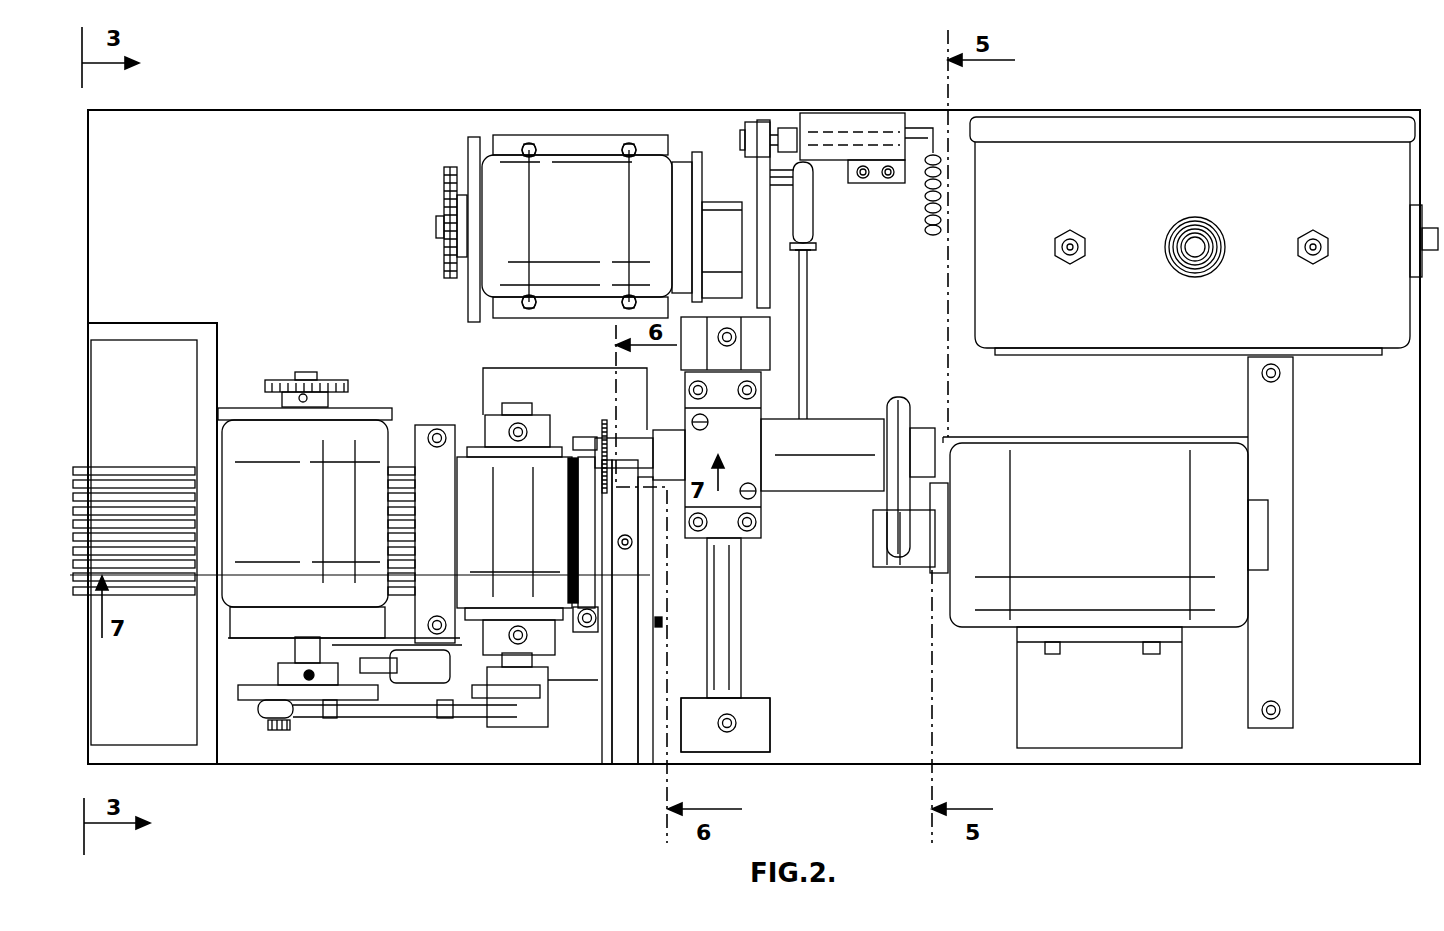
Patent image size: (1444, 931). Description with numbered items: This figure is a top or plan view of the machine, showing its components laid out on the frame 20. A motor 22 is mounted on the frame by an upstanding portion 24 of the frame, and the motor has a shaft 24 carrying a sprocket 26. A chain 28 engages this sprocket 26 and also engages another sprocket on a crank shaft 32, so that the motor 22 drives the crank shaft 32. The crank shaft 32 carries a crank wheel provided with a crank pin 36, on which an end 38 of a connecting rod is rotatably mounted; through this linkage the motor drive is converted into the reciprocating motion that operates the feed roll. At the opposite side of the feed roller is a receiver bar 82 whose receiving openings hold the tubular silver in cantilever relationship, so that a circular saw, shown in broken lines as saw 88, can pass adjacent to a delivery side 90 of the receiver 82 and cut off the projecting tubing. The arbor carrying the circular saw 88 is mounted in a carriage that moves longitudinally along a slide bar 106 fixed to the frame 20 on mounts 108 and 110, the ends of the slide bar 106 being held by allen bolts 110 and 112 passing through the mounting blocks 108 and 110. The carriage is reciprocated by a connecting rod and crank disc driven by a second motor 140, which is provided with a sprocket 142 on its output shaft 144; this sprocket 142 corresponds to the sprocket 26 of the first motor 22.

The frame 20 is at (835, 748).
The motor 22 is at (337, 450).
The shaft 24 is at (307, 370).
The sprocket 26 is at (330, 380).
The chain 28 is at (277, 378).
The crank shaft 32 is at (293, 655).
The crank pin 36 is at (285, 732).
The end of connecting rod 38 is at (267, 715).
The receiver bar 82 is at (592, 590).
The circular saw 88 is at (603, 420).
The delivery side 90 is at (603, 567).
The slide bar 106 is at (729, 660).
The mounting block 108 is at (758, 721).
The mounting block 110 is at (761, 353).
The allen bolt 112 is at (736, 348).
The motor 140 is at (598, 238).
The sprocket 142 is at (436, 228).
The output shaft 144 is at (438, 210).